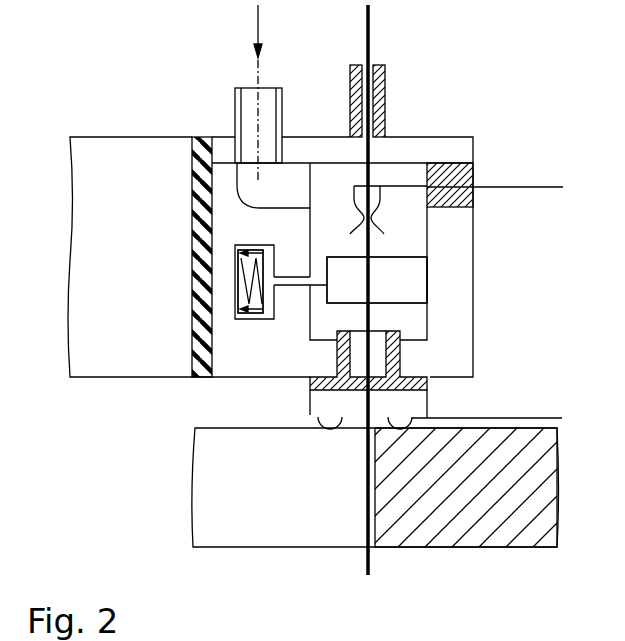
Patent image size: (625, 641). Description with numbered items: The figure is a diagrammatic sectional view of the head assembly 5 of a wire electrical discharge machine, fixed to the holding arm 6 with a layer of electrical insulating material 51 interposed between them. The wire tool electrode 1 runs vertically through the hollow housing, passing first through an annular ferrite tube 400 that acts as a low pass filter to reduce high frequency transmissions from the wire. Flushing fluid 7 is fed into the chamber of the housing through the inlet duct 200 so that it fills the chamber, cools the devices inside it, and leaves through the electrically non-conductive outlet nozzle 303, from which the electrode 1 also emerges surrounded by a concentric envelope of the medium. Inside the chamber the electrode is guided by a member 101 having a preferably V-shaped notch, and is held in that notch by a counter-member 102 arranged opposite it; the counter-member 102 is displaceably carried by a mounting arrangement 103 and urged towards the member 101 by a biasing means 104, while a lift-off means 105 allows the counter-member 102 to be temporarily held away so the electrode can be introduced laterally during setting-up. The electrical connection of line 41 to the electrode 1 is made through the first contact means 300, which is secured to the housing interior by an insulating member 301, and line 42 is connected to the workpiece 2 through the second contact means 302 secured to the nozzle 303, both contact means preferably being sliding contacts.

The tool electrode 1 is at (371, 22).
The workpiece 2 is at (215, 467).
The head assembly 5 is at (520, 294).
The holding arm 6 is at (90, 290).
The flushing fluid 7 is at (259, 30).
The feed line 41 is at (515, 186).
The feed line 42 is at (510, 417).
The layer of electrical insulating material 51 is at (195, 137).
The member 101 is at (405, 278).
The counter-member 102 is at (351, 280).
The mounting arrangement 103 is at (294, 278).
The biasing means 104 is at (246, 272).
The lift-off means 105 is at (257, 315).
The inlet duct 200 is at (283, 118).
The first contact means 300 is at (381, 200).
The insulating member 301 is at (474, 197).
The second contact means 302 is at (318, 417).
The outlet nozzle 303 is at (431, 389).
The annular ferrite tube 400 is at (387, 94).